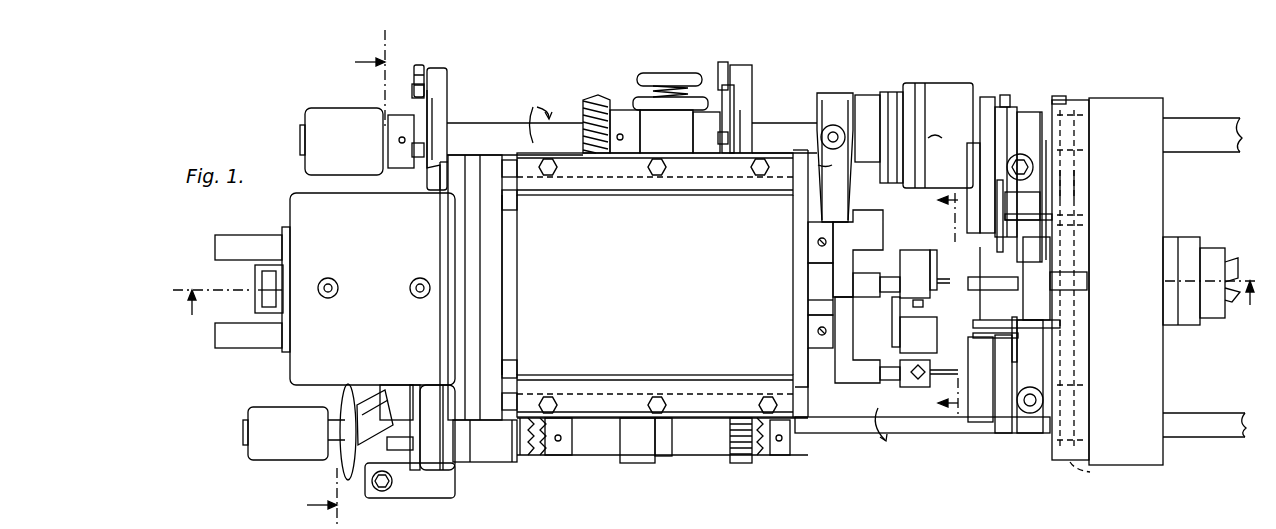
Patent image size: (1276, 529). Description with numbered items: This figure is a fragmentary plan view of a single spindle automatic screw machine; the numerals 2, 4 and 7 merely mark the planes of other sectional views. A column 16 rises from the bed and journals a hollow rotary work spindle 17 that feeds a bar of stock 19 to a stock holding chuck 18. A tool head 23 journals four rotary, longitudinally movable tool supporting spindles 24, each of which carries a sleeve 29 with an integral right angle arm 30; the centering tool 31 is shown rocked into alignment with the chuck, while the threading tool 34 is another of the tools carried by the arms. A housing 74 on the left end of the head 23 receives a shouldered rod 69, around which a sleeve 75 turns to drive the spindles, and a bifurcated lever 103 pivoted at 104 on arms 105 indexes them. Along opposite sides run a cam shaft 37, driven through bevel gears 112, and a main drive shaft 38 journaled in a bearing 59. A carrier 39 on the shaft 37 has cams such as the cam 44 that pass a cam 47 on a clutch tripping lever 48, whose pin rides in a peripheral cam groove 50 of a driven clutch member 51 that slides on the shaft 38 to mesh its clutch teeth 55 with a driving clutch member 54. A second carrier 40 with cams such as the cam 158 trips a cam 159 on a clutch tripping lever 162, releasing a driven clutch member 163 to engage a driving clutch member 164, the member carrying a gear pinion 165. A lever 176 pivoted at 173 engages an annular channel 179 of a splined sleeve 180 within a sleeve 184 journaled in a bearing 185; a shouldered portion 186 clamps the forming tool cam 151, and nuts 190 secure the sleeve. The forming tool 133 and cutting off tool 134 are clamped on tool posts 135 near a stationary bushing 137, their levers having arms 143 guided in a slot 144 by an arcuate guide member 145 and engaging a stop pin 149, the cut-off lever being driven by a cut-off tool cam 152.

The section line 2- 2 is at (715, 309).
The section line 4- 4 is at (346, 278).
The section line 7- 7 is at (946, 303).
The column 16 is at (1145, 102).
The hollow rotary work spindle 17 is at (1205, 250).
The bar stock holding chuck 18 is at (1055, 262).
The bar of stock 19 is at (1232, 290).
The tool head 23 is at (655, 283).
The tool supporting spindles 24 is at (243, 248).
The sleeve 29 is at (850, 282).
The right angle arm 30 is at (845, 345).
The centering tool 31 is at (925, 268).
The threading tool 34 is at (935, 428).
The cam shaft 37 is at (475, 130).
The main drive shaft 38 is at (1205, 418).
The carrier 39 is at (437, 70).
The carrier 40 is at (745, 68).
The cam 44 is at (418, 68).
The cam 47 is at (405, 136).
The clutch tripping lever 48 is at (430, 182).
The peripheral cam groove 50 is at (525, 462).
The driven clutch member 51 is at (536, 458).
The driving clutch member 54 is at (560, 458).
The clutch teeth 55 is at (535, 415).
The bearing 59 is at (272, 448).
The shouldered shaft or rod 69 is at (258, 291).
The housing 74 is at (368, 289).
The sleeve 75 is at (255, 276).
The bifurcated lever 103 is at (380, 400).
The pivot 104 is at (380, 491).
The arms 105 is at (428, 490).
The bevel gears 112 is at (590, 96).
The forming tool 133 is at (1010, 205).
The cutting off tool 134 is at (1060, 325).
The tool posts 135 is at (1032, 112).
The stationary bushing 137 is at (1050, 302).
The arms 143 is at (1090, 472).
The slot 144 is at (1075, 105).
The arcuate guide member 145 is at (1074, 196).
The stop pin 149 is at (1087, 283).
The forming tool cam 151 is at (1003, 95).
The cut-off tool cam 152 is at (1058, 96).
The cam 158 is at (725, 64).
The cam 159 is at (735, 125).
The clutch tripping lever 162 is at (740, 160).
The driven clutch member 163 is at (742, 463).
The driving clutch member 164 is at (790, 452).
The gear pinion 165 is at (762, 458).
The pivot 173 is at (840, 216).
The lever 176 is at (822, 162).
The annular channel 179 is at (835, 95).
The sleeve 180 is at (860, 98).
The sleeve 184 is at (890, 96).
The bearing 185 is at (940, 95).
The shouldered portion 186 is at (985, 97).
The nuts 190 is at (895, 136).